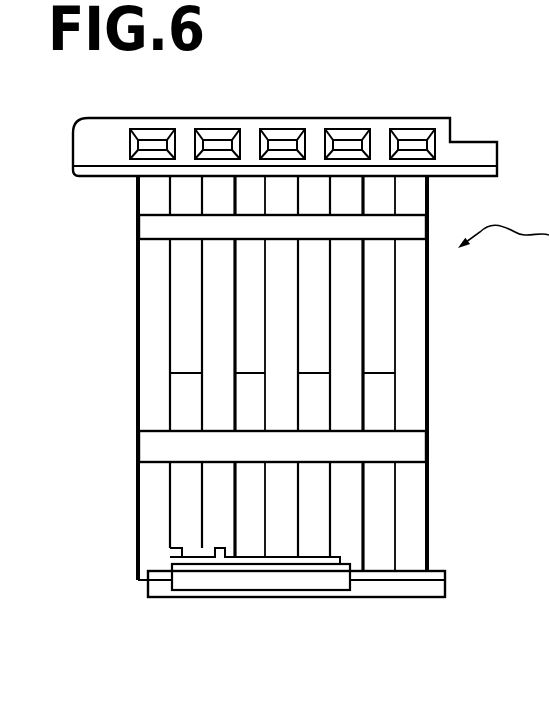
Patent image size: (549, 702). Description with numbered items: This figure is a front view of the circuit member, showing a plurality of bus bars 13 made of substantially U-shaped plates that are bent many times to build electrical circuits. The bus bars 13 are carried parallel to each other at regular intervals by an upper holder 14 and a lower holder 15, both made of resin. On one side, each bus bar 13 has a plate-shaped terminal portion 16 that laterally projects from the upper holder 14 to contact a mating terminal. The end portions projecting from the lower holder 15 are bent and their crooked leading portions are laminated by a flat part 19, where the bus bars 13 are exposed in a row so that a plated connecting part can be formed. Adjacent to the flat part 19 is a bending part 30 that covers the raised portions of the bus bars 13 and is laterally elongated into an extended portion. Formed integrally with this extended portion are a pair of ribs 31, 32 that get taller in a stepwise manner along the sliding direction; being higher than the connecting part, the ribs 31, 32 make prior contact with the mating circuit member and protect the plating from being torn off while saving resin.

The bus bar 13 is at (347, 317).
The upper holder 14 is at (430, 118).
The lower holder 15 is at (378, 390).
The terminal portion 16 is at (408, 140).
The flat part 19 is at (323, 578).
The bending part 30 is at (290, 566).
The rib 31 is at (173, 548).
The rib 32 is at (217, 548).